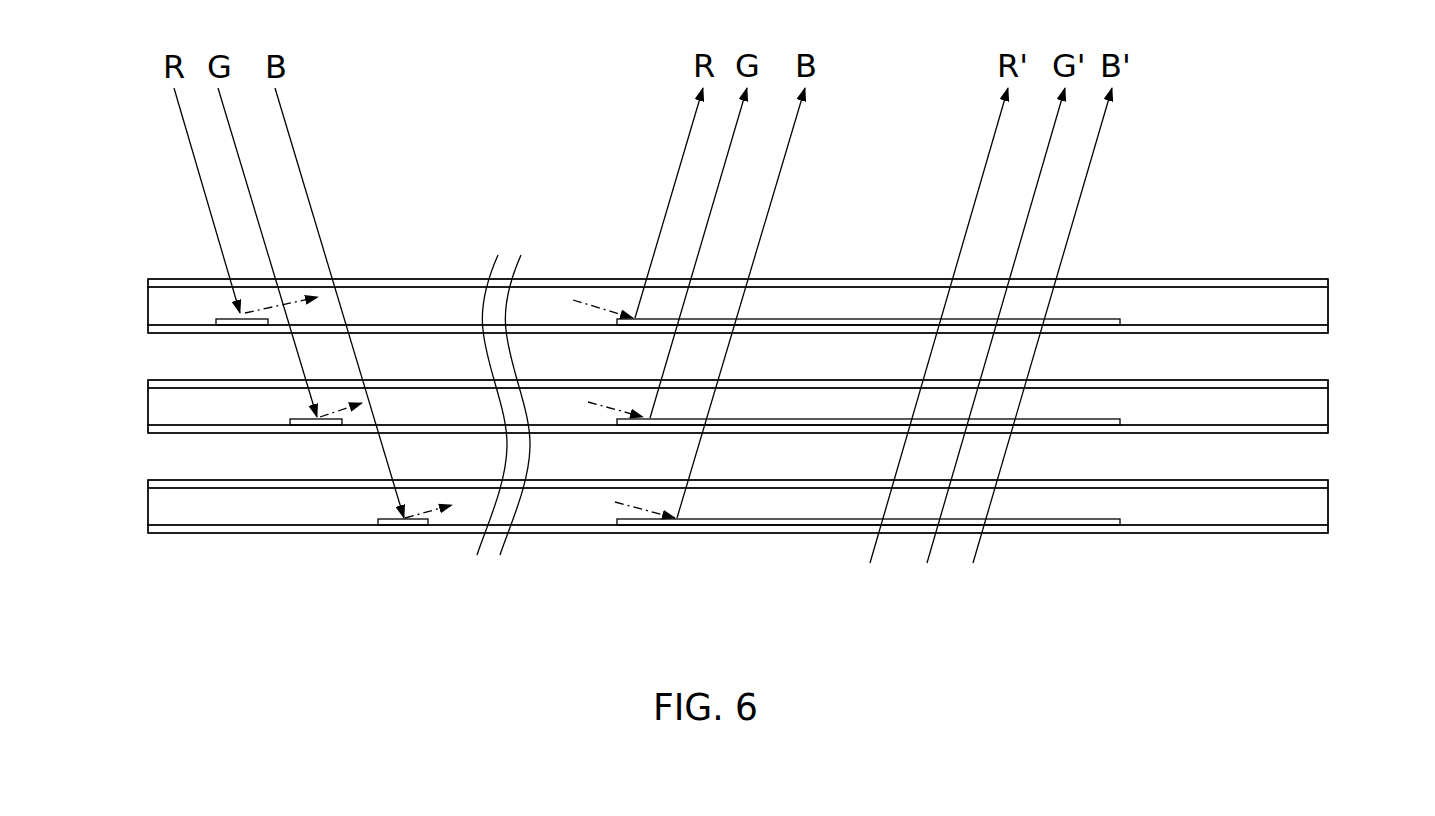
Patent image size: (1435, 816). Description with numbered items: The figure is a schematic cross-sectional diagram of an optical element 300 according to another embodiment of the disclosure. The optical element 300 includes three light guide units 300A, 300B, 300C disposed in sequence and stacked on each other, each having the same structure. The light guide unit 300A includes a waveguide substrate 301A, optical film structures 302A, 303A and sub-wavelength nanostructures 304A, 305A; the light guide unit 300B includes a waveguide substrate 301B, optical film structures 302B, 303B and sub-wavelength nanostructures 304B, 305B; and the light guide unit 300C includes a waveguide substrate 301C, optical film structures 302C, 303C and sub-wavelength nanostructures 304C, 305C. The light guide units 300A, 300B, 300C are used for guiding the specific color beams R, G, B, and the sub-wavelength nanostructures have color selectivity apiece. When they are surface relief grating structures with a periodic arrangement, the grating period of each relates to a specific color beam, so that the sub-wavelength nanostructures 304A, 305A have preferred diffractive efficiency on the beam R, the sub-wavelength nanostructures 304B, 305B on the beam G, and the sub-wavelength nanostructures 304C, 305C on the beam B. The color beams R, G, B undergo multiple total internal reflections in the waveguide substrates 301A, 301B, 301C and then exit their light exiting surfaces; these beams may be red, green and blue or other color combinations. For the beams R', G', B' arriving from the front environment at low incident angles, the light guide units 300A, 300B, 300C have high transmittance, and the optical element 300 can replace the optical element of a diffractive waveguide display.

The optical element 300 is at (1262, 209).
The light guide unit 300A is at (1418, 322).
The light guide unit 300B is at (1418, 422).
The light guide unit 300C is at (1418, 522).
The waveguide substrate 301A is at (1312, 322).
The waveguide substrate 301B is at (1312, 422).
The waveguide substrate 301C is at (1312, 522).
The optical film structure 302A is at (148, 280).
The optical film structure 302B is at (148, 381).
The optical film structure 302C is at (148, 481).
The optical film structure 303A is at (148, 330).
The optical film structure 303B is at (148, 430).
The optical film structure 303C is at (148, 530).
The sub-wavelength nanostructure 304A is at (243, 325).
The sub-wavelength nanostructure 304B is at (316, 425).
The sub-wavelength nanostructure 304C is at (405, 525).
The sub-wavelength nanostructure 305A is at (853, 323).
The sub-wavelength nanostructure 305B is at (797, 425).
The sub-wavelength nanostructure 305C is at (707, 533).